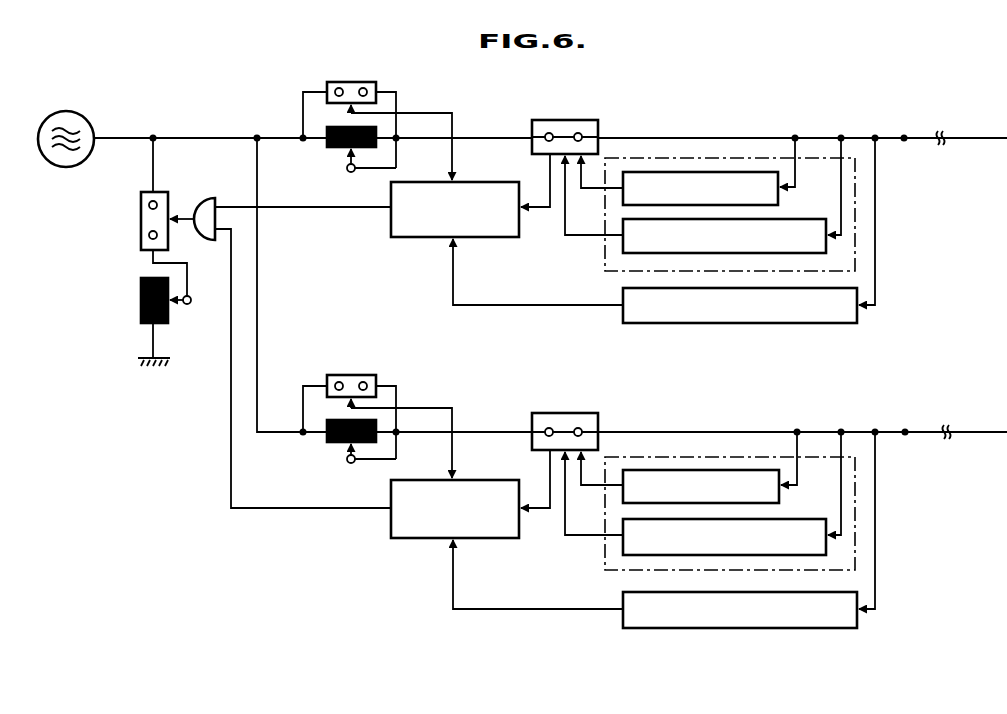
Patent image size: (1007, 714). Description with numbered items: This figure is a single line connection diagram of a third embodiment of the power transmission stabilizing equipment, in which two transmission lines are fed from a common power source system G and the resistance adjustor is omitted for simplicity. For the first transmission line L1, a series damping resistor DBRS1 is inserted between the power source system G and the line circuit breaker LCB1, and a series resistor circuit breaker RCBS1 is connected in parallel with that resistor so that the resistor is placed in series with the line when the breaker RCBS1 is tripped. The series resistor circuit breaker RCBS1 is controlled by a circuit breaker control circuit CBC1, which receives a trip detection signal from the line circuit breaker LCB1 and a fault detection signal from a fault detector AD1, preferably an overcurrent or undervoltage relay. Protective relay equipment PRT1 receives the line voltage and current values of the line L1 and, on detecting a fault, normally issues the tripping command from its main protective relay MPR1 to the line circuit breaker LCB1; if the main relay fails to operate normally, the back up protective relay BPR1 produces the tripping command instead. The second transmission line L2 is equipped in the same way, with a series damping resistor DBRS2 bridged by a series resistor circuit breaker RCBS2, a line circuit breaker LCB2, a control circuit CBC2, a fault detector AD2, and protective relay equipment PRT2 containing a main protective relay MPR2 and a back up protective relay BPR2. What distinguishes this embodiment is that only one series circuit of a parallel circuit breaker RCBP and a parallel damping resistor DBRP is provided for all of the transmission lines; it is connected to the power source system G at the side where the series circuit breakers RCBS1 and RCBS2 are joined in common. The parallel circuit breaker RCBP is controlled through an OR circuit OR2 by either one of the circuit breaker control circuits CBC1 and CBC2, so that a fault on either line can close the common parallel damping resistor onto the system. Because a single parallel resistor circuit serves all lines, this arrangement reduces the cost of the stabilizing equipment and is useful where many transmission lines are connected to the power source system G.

The power source system G is at (66, 167).
The parallel circuit breaker RCBP is at (138, 215).
The parallel damping resistor DBRP is at (138, 298).
The OR circuit OR2 is at (203, 199).
The series resistor circuit breaker RCBS1 is at (351, 82).
The series damping resistor DBRS1 is at (338, 148).
The circuit breaker control circuit CBC1 is at (400, 237).
The line circuit breaker LCB1 is at (553, 120).
The protective relay equipment PRT1 is at (620, 158).
The first transmission line L1 is at (712, 138).
The main protective relay MPR1 is at (742, 172).
The back up protective relay BPR1 is at (623, 245).
The fault detector AD1 is at (623, 313).
The series resistor circuit breaker RCBS2 is at (344, 375).
The series damping resistor DBRS2 is at (338, 442).
The circuit breaker control circuit CBC2 is at (413, 540).
The line circuit breaker LCB2 is at (552, 413).
The protective relay equipment PRT2 is at (620, 457).
The second transmission line L2 is at (740, 432).
The main protective relay MPR2 is at (755, 470).
The back up protective relay BPR2 is at (623, 547).
The fault detector AD2 is at (623, 617).